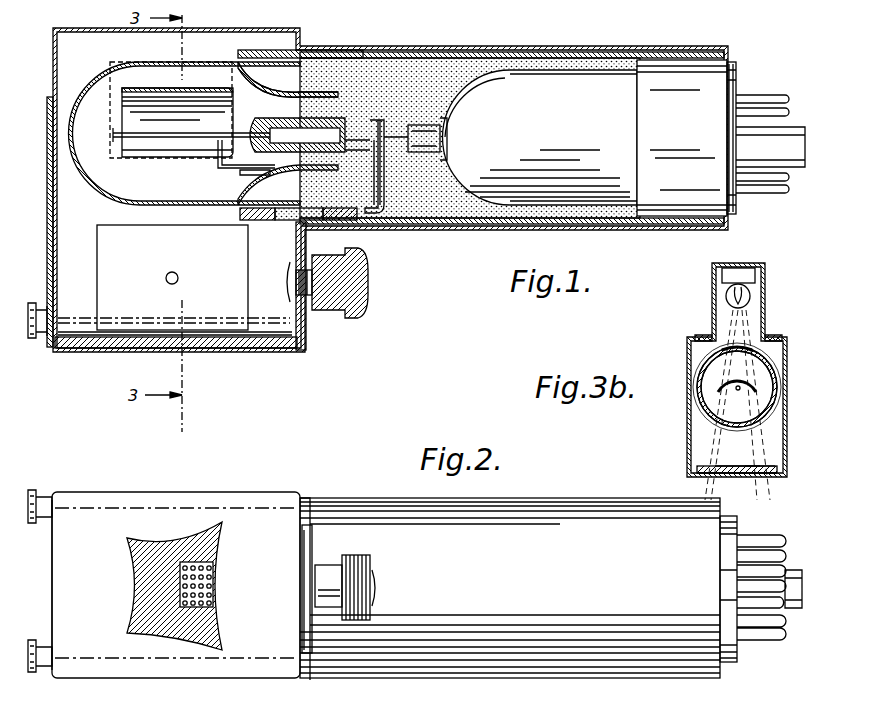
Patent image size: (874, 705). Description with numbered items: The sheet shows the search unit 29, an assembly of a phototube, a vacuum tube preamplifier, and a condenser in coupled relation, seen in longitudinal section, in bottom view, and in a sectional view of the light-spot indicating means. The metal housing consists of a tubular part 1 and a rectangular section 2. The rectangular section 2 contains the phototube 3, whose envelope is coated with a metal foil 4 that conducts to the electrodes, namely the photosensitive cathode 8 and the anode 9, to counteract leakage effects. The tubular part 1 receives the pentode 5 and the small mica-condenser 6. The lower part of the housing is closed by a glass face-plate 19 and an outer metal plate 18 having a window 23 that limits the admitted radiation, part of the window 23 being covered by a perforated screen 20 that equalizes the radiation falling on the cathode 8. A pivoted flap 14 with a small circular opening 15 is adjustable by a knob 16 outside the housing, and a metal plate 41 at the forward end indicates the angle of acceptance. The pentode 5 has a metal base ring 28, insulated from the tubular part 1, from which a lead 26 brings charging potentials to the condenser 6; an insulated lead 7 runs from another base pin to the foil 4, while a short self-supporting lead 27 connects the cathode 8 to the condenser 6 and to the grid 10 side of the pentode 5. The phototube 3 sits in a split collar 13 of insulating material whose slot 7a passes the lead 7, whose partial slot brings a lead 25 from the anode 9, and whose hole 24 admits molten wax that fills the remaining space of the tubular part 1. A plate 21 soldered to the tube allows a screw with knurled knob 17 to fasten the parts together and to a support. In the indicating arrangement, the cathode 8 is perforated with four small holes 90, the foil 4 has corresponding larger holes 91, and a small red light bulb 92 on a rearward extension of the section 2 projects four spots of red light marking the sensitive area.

In FIG. 1, the tubular part 1 is at (430, 47).
In FIG. 2, the tubular part 1 is at (551, 588).
In FIG. 1, the rectangular section 2 is at (56, 70).
In FIG. 2, the rectangular section 2 is at (246, 492).
In FIG. 3B, the rectangular section 2 is at (789, 352).
In FIG. 1, the phototube 3 is at (93, 68).
In FIG. 3B, the phototube 3 is at (762, 414).
In FIG. 1, the metal foil 4 is at (140, 64).
In FIG. 3B, the metal foil 4 is at (712, 366).
In FIG. 1, the pentode 5 is at (540, 137).
In FIG. 1, the mica-condenser 6 is at (388, 215).
In FIG. 1, the insulated lead 7 is at (580, 58).
In FIG. 1, the slot 7a is at (325, 50).
In FIG. 1, the photosensitive cathode 8 is at (172, 150).
In FIG. 3B, the photosensitive cathode 8 is at (716, 388).
In FIG. 1, the anode 9 is at (140, 140).
In FIG. 1, the grid 10 is at (440, 132).
In FIG. 1, the split collar 13 is at (240, 214).
In FIG. 1, the pivoted flap 14 is at (240, 265).
In FIG. 1, the circular opening 15 is at (178, 272).
In FIG. 1, the knob 16 is at (44, 306).
In FIG. 2, the knob 16 is at (46, 496).
In FIG. 1, the screw with knurled knob 17 is at (370, 283).
In FIG. 2, the screw with knurled knob 17 is at (374, 578).
In FIG. 1, the outer metal plate 18 is at (90, 352).
In FIG. 2, the outer metal plate 18 is at (175, 590).
In FIG. 3B, the outer metal plate 18 is at (697, 478).
In FIG. 1, the glass face-plate 19 is at (158, 352).
In FIG. 2, the glass face-plate 19 is at (214, 632).
In FIG. 3B, the glass face-plate 19 is at (729, 478).
In FIG. 1, the perforated screen 20 is at (258, 330).
In FIG. 2, the perforated screen 20 is at (214, 580).
In FIG. 3B, the perforated screen 20 is at (737, 465).
In FIG. 1, the plate 21 is at (308, 338).
In FIG. 2, the plate 21 is at (312, 548).
In FIG. 1, the window 23 is at (202, 352).
In FIG. 2, the window 23 is at (222, 556).
In FIG. 3B, the window 23 is at (760, 478).
In FIG. 1, the hole 24 is at (284, 221).
In FIG. 1, the lead 25 is at (324, 165).
In FIG. 1, the lead 26 is at (458, 220).
In FIG. 1, the lead 27 is at (280, 116).
In FIG. 1, the metal base ring 28 is at (721, 138).
In FIG. 1, the search unit 29 is at (273, 355).
In FIG. 2, the search unit 29 is at (298, 480).
In FIG. 1, the metal plate 41 is at (49, 256).
In FIG. 2, the metal plate 41 is at (53, 575).
In FIG. 3B, the holes 90 is at (738, 401).
In FIG. 3B, the holes 91 is at (742, 352).
In FIG. 3B, the red light bulb 92 is at (751, 298).